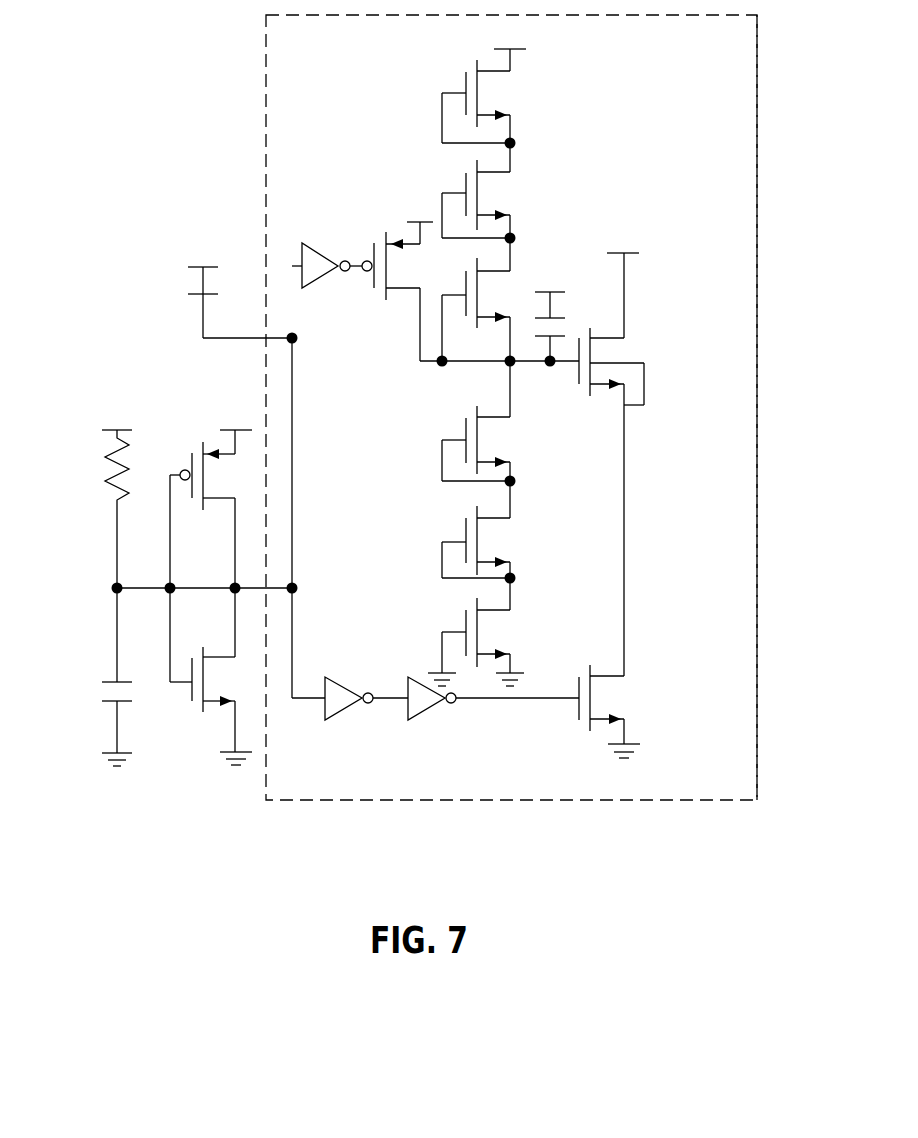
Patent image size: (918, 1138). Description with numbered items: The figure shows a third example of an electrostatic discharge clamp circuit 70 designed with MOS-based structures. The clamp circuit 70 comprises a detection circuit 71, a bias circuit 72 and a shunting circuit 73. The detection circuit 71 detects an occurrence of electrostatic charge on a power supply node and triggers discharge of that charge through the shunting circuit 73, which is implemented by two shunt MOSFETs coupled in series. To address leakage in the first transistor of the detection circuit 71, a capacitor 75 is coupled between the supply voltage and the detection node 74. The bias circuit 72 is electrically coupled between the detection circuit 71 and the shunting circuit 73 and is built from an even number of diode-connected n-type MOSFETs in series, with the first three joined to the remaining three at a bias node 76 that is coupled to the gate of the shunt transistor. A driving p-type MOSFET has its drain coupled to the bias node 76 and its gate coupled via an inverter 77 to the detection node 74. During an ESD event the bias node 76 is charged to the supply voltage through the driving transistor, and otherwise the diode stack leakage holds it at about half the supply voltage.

The clamp circuit 70 is at (120, 184).
The detection circuit 71 is at (157, 420).
The bias circuit 72 is at (266, 56).
The shunting circuit 73 is at (757, 176).
The detection node 74 is at (297, 586).
The capacitor 75 is at (188, 293).
The bias node 76 is at (513, 365).
The inverter 77 is at (320, 256).